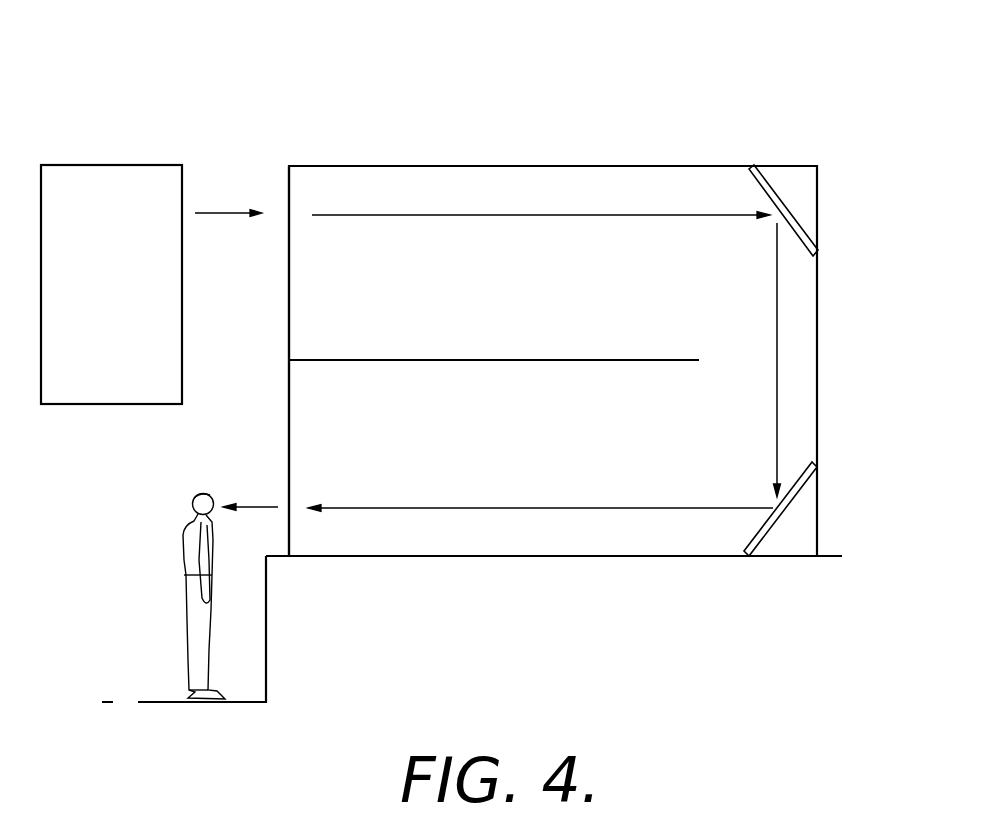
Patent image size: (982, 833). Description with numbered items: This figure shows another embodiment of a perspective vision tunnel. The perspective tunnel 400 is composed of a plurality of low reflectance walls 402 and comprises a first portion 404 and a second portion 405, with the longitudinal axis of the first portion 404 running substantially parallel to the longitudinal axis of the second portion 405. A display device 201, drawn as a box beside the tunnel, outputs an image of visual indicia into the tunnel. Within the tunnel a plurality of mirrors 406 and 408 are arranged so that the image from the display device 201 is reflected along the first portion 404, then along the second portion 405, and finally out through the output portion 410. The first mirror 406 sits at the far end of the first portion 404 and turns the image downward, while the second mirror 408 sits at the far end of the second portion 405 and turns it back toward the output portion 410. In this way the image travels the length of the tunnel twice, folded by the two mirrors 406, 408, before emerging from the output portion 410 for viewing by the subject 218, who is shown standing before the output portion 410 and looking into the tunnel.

The perspective tunnel 400 is at (138, 46).
The display device 201 is at (141, 165).
The low reflectance walls 402 is at (818, 196).
The first portion 404 is at (321, 164).
The second portion 405 is at (510, 557).
The mirror 406 is at (765, 181).
The mirror 408 is at (803, 484).
The output portion 410 is at (289, 468).
The subject 218 is at (180, 541).